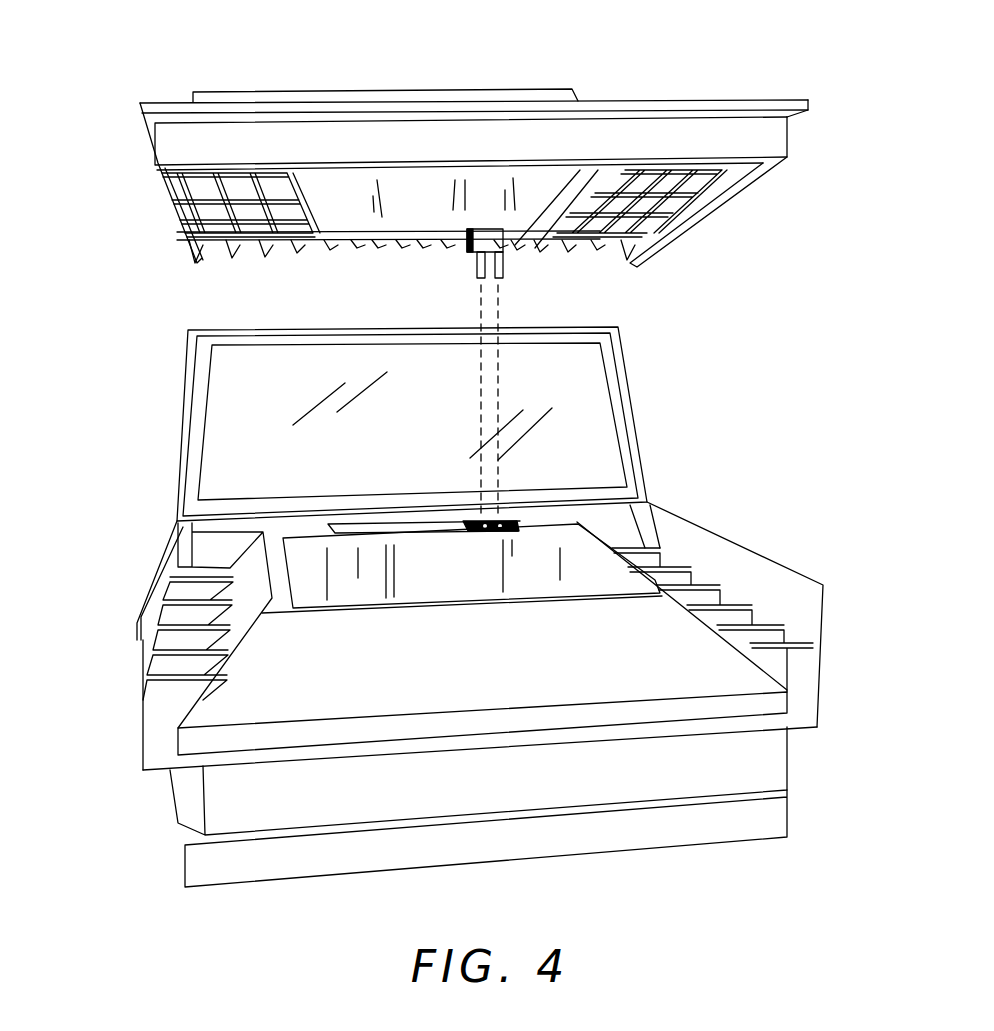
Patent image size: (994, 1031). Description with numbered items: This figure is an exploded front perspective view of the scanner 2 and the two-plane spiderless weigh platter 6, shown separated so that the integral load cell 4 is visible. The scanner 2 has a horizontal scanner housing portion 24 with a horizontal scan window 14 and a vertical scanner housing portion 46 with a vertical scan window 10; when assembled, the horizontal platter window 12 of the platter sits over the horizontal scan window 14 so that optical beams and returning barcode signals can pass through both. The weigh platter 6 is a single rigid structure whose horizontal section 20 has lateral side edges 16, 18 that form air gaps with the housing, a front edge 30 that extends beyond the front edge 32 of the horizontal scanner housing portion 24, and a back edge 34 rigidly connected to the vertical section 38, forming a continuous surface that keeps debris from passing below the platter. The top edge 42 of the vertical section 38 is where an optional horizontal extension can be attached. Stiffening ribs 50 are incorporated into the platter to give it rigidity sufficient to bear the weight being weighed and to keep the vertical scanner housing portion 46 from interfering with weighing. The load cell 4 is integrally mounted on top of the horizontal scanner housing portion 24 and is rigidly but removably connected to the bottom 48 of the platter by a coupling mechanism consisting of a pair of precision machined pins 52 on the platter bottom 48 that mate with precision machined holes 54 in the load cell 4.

The scanner 2 is at (667, 573).
The load cell 4 is at (397, 527).
The two-plane spiderless weigh platter 6 is at (673, 97).
The vertical scan window 10 is at (560, 372).
The horizontal platter window 12 is at (398, 202).
The horizontal scan window 14 is at (318, 558).
The lateral side edge 16 is at (808, 107).
The lateral side edge 18 is at (143, 133).
The horizontal section 20 is at (708, 100).
The horizontal scanner housing portion 24 is at (133, 722).
The front edge 30 is at (760, 106).
The front edge 32 is at (628, 648).
The back edge 34 is at (260, 247).
The vertical section 38 is at (447, 94).
The top edge 42 is at (333, 94).
The vertical scanner housing portion 46 is at (183, 372).
The bottom 48 is at (342, 248).
The stiffening ribs 50 is at (143, 233).
The precision machined pins 52 is at (505, 264).
The precision machined holes 54 is at (505, 528).